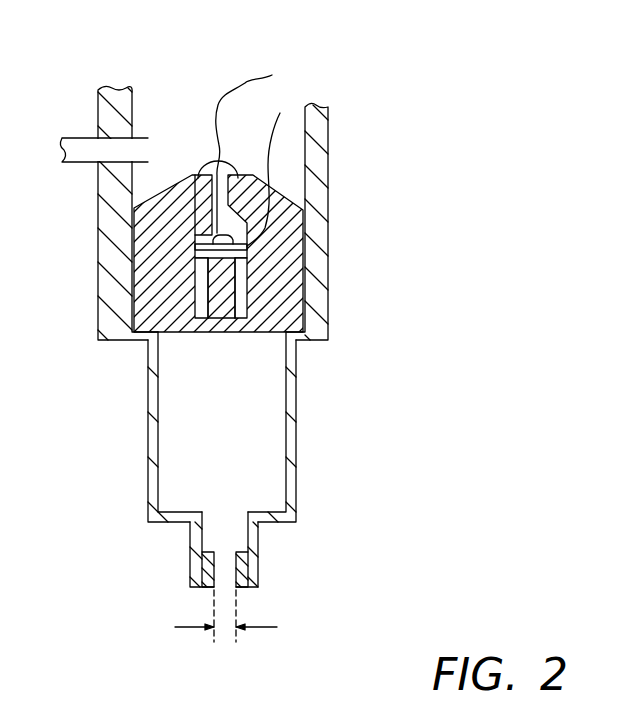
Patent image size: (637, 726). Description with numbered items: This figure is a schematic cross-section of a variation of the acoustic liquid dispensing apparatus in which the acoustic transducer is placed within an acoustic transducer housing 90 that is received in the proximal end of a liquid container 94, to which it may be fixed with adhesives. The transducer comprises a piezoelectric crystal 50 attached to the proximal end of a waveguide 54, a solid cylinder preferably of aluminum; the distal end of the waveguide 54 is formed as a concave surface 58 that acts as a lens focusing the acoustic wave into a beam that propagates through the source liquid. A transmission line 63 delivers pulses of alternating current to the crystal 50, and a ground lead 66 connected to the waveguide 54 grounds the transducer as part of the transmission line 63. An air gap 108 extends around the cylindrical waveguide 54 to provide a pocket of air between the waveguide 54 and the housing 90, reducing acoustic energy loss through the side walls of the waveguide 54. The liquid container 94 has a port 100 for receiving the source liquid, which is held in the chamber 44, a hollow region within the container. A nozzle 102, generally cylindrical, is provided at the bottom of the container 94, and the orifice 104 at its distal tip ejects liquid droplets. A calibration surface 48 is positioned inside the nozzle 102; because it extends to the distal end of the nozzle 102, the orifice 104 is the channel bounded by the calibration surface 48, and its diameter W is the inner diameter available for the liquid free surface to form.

The chamber 44 is at (235, 474).
The calibration surface 48 is at (247, 553).
The piezoelectric crystal 50 is at (206, 247).
The waveguide 54 is at (218, 305).
The concave surface 58 is at (219, 324).
The transmission line 63 is at (252, 77).
The ground lead 66 is at (266, 142).
The acoustic transducer housing 90 is at (173, 187).
The liquid container 94 is at (98, 228).
The port 100 is at (76, 138).
The nozzle 102 is at (190, 572).
The orifice 104 is at (223, 582).
The air gap 108 is at (236, 322).
The diameter of the orifice W is at (237, 630).